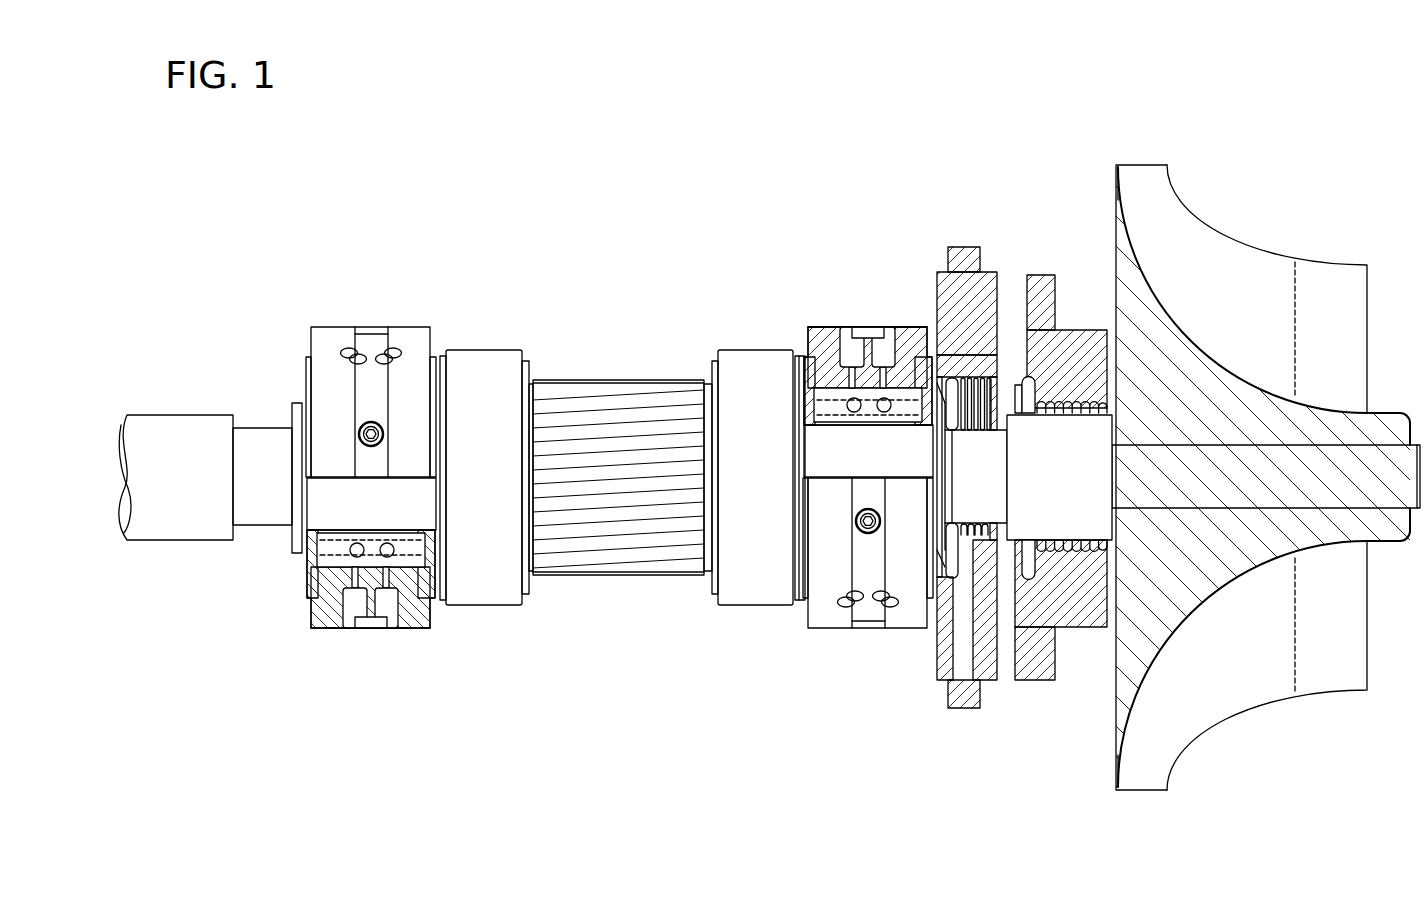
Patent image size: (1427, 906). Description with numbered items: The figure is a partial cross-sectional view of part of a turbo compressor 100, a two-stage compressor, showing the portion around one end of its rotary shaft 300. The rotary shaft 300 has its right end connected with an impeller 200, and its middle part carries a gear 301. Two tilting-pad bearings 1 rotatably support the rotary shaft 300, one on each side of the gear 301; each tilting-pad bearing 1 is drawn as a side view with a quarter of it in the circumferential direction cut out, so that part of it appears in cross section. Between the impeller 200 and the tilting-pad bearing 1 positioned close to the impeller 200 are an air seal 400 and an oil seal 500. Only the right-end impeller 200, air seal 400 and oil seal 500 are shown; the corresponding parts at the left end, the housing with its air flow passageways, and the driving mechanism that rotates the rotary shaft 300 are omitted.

The tilting-pad bearing 1 is at (378, 658).
The turbo compressor 100 is at (1336, 133).
The impeller 200 is at (1242, 262).
The rotary shaft 300 is at (817, 458).
The gear 301 is at (630, 392).
The air seal 400 is at (1043, 285).
The oil seal 500 is at (968, 247).